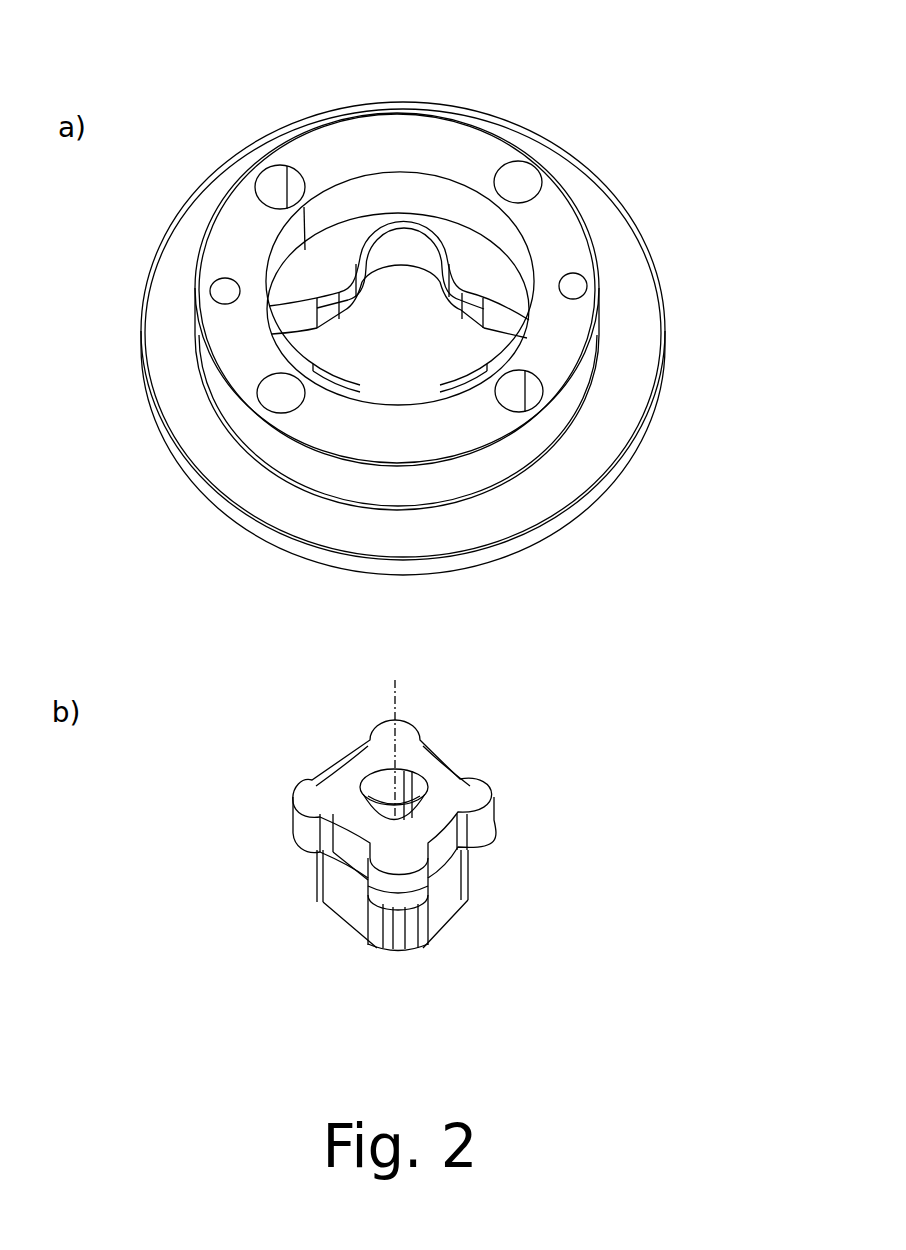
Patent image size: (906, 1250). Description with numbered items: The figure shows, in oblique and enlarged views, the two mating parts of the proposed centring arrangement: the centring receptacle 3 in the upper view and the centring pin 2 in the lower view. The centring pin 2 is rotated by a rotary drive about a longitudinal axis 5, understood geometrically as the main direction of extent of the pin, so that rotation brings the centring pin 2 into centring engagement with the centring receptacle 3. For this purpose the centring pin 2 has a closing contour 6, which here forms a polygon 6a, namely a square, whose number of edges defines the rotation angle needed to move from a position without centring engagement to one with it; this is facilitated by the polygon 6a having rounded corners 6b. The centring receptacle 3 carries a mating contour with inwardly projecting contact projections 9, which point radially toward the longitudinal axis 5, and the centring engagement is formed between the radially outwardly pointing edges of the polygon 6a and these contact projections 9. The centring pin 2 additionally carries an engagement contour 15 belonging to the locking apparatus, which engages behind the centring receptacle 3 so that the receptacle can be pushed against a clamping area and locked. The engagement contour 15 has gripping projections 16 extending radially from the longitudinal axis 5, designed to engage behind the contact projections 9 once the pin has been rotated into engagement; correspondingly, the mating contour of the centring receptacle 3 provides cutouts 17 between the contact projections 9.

In FIG. 2b, the centring pin 2 is at (456, 761).
In FIG. 2a, the centring receptacle 3 is at (685, 332).
In FIG. 2b, the longitudinal axis 5 is at (400, 700).
In FIG. 2b, the closing contour 6 is at (442, 890).
In FIG. 2b, the polygon 6a is at (392, 881).
In FIG. 2b, the rounded corners 6b is at (397, 947).
In FIG. 2a, the contact projections 9 is at (483, 273).
In FIG. 2b, the engagement contour 15 is at (315, 782).
In FIG. 2b, the gripping projections 16 is at (383, 733).
In FIG. 2a, the cutouts 17 is at (404, 280).